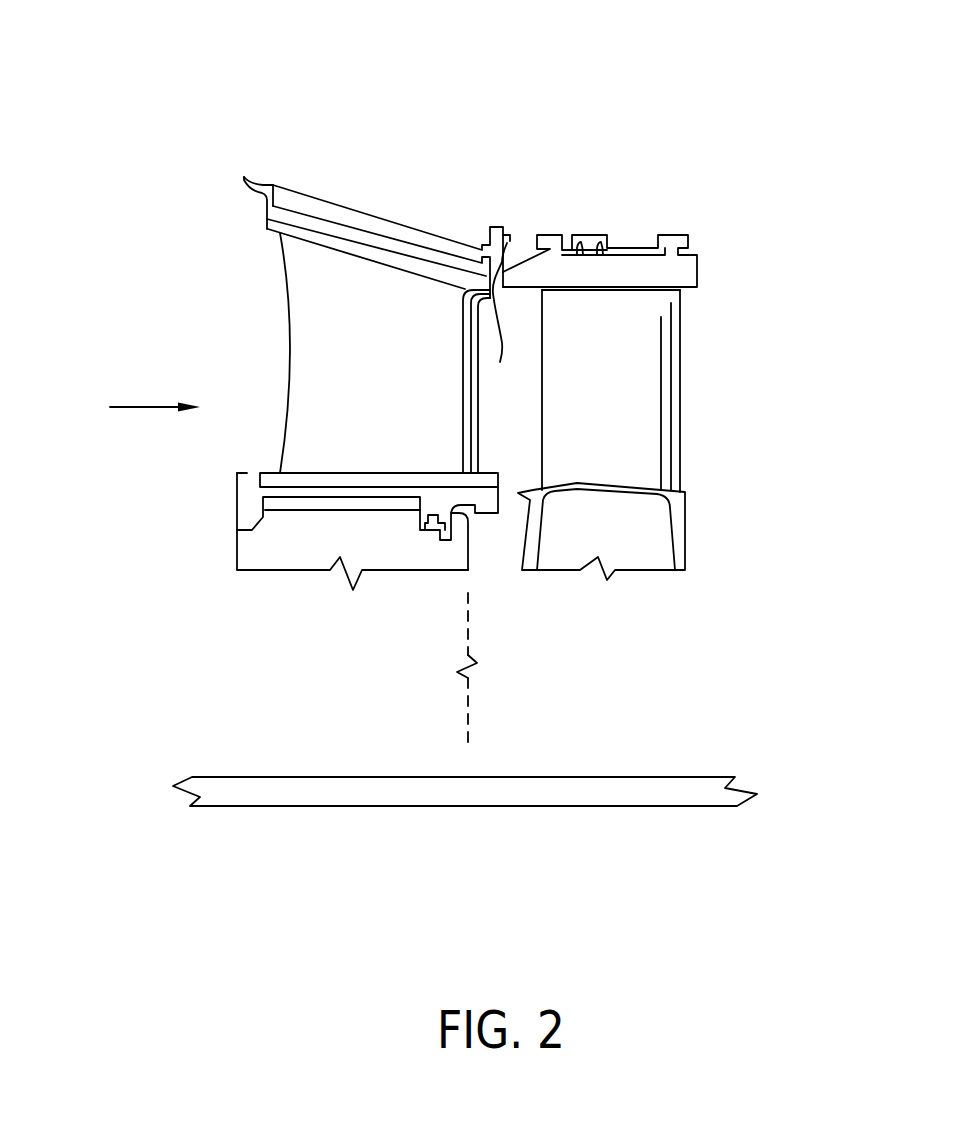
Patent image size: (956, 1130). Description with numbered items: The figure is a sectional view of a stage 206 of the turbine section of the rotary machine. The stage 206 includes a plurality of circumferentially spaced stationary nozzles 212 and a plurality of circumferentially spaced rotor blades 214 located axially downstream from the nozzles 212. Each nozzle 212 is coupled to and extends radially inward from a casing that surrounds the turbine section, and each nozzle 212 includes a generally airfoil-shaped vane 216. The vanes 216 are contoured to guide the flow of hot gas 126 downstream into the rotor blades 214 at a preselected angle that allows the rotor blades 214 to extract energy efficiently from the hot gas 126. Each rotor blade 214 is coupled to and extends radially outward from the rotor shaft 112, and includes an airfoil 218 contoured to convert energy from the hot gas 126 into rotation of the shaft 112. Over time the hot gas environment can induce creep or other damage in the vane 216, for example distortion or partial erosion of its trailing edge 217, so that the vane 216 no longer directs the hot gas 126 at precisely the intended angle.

The stage 206 is at (460, 105).
The rotor shaft 112 is at (630, 807).
The hot gas 126 is at (148, 407).
The stationary nozzle 212 is at (290, 362).
The rotor blade 214 is at (680, 368).
The vane 216 is at (400, 385).
The trailing edge 217 is at (507, 243).
The airfoil 218 is at (617, 420).